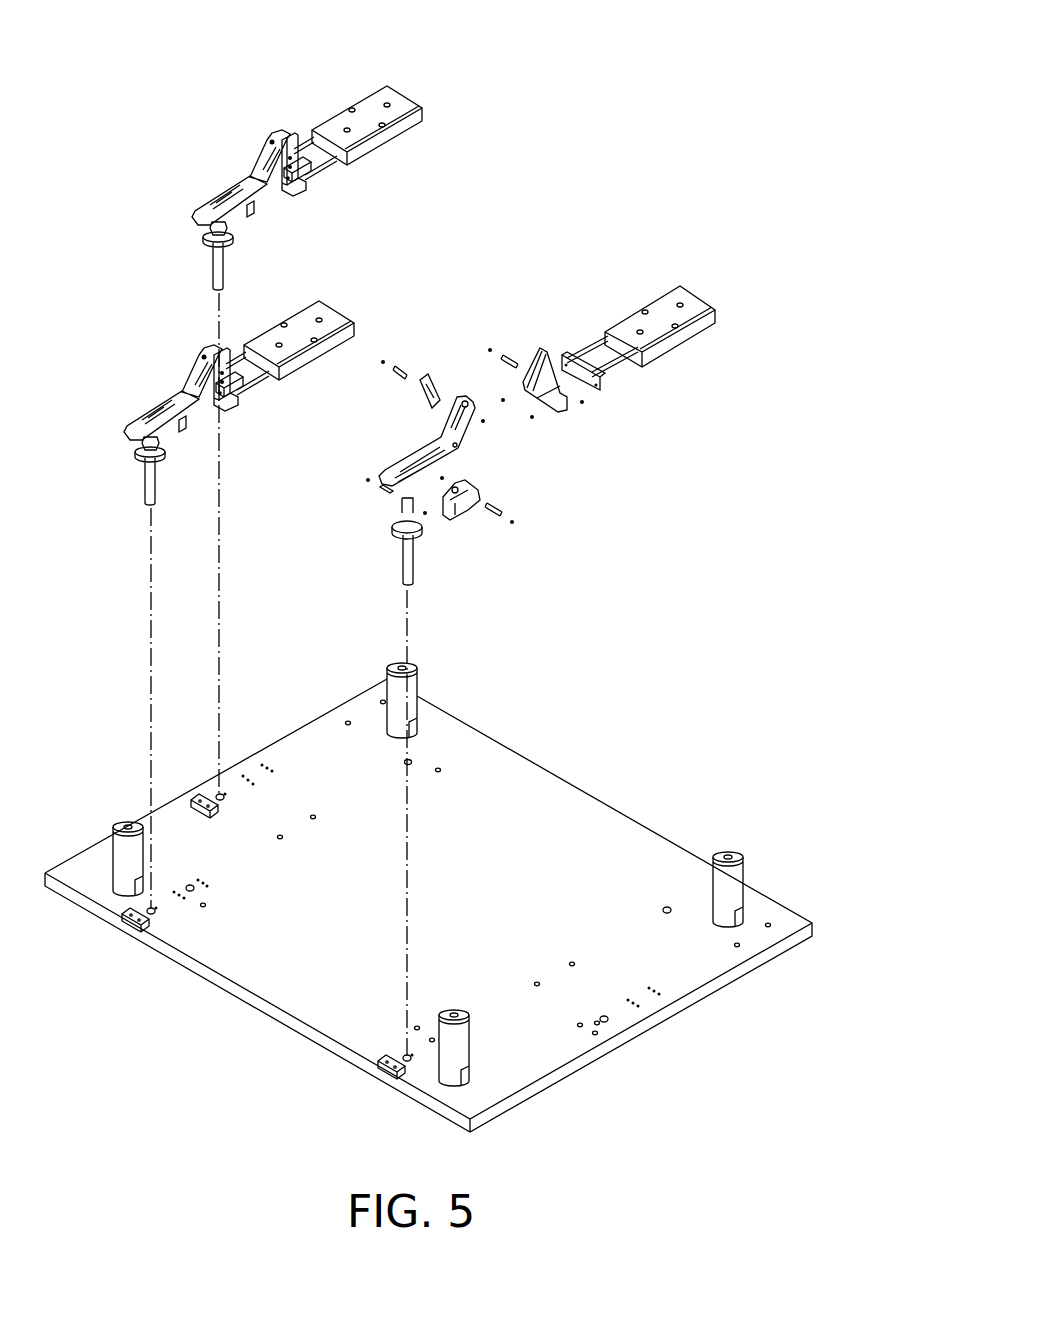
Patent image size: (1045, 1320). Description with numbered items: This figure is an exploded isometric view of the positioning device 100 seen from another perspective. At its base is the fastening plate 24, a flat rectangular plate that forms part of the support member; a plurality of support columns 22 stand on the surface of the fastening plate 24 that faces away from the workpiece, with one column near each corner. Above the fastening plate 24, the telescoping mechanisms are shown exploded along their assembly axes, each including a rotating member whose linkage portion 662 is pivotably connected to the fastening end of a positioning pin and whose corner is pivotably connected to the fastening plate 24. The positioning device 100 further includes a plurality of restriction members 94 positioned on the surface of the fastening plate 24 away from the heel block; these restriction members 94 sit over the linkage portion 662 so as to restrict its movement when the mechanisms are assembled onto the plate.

The positioning device 100 is at (558, 74).
The linkage portion 662 is at (393, 462).
The support column 22 is at (718, 887).
The fastening plate 24 is at (553, 1078).
The restriction member 94 is at (385, 1065).